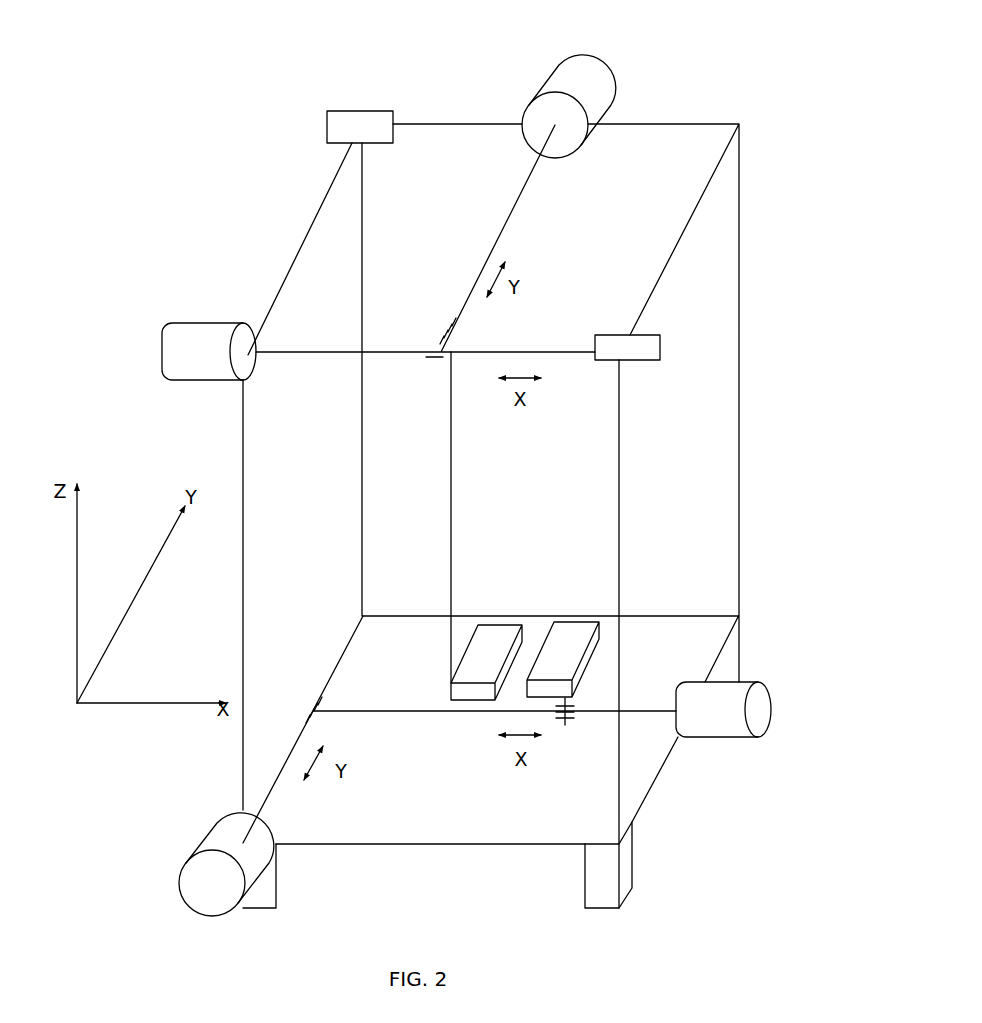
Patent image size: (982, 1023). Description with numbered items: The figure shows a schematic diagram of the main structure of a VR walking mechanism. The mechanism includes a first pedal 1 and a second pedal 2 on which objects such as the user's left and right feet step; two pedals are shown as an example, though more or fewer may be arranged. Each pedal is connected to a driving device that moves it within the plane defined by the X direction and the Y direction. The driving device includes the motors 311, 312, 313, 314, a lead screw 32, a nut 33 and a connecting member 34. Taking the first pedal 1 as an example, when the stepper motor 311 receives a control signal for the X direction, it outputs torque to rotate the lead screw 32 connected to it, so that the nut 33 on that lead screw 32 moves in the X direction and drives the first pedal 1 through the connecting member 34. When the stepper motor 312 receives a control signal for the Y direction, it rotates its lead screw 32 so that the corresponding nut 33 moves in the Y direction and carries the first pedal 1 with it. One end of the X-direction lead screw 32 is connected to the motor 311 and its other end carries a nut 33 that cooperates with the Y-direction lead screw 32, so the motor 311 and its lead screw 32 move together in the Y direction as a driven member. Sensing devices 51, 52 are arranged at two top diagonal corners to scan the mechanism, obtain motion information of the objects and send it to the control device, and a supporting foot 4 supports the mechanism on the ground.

The first pedal 1 is at (605, 628).
The second pedal 2 is at (495, 637).
The supporting foot 4 is at (617, 880).
The lead screw 32 is at (310, 228).
The nut 33 is at (437, 352).
The connecting member 34 is at (452, 628).
The sensing device 51 is at (373, 130).
The sensing device 52 is at (635, 348).
The stepper motor 311 is at (750, 708).
The stepper motor 312 is at (258, 853).
The motor 313 is at (187, 338).
The motor 314 is at (593, 108).